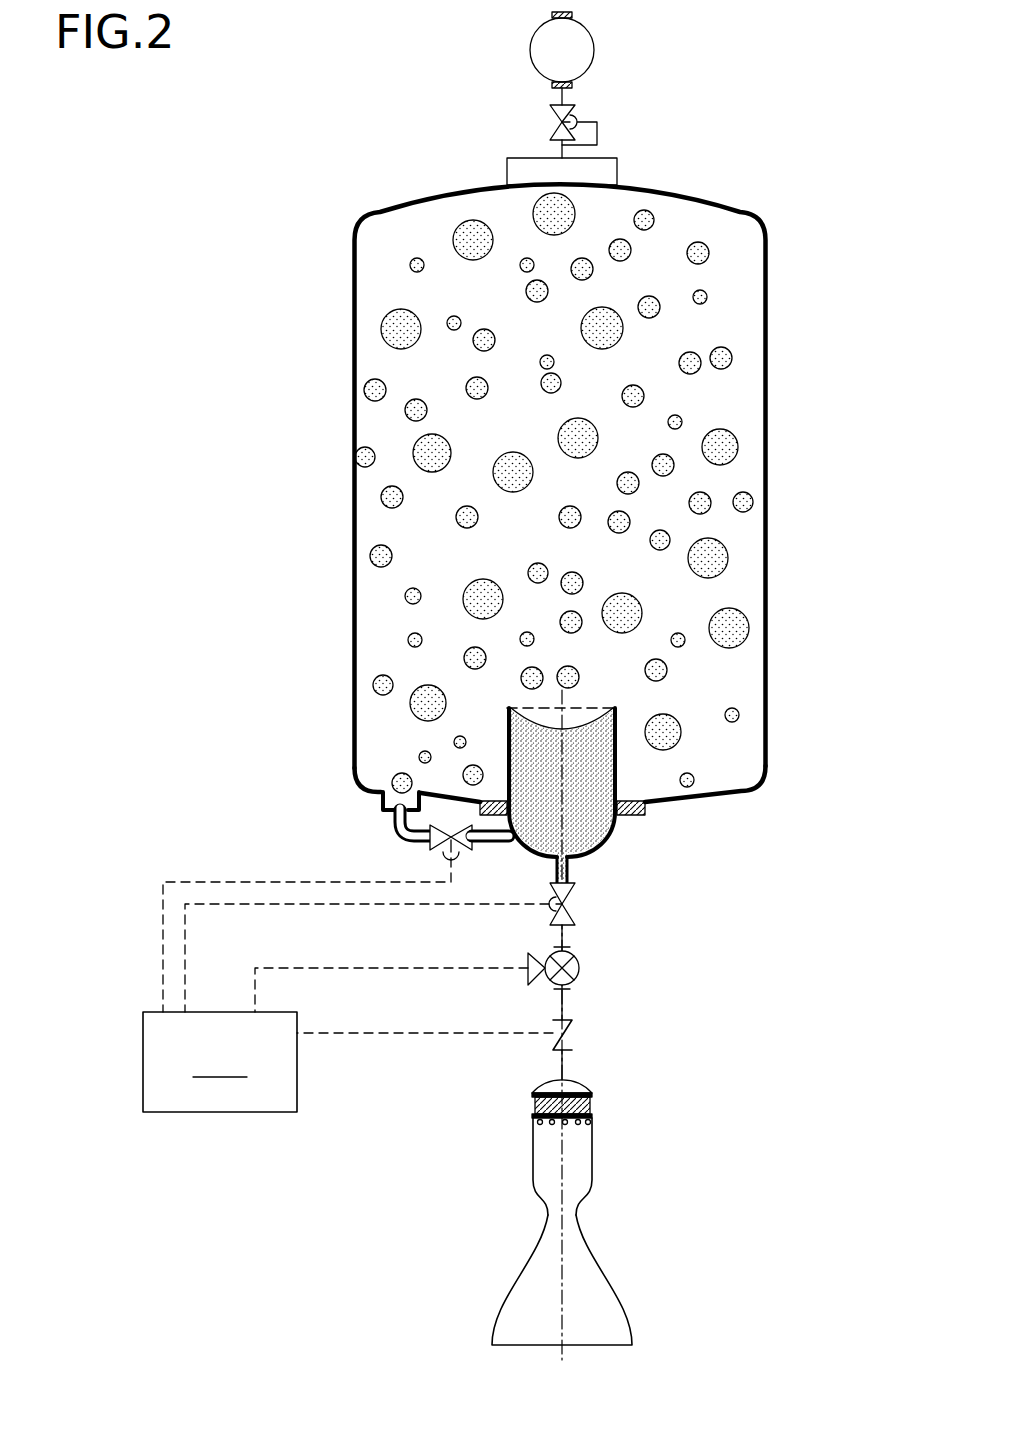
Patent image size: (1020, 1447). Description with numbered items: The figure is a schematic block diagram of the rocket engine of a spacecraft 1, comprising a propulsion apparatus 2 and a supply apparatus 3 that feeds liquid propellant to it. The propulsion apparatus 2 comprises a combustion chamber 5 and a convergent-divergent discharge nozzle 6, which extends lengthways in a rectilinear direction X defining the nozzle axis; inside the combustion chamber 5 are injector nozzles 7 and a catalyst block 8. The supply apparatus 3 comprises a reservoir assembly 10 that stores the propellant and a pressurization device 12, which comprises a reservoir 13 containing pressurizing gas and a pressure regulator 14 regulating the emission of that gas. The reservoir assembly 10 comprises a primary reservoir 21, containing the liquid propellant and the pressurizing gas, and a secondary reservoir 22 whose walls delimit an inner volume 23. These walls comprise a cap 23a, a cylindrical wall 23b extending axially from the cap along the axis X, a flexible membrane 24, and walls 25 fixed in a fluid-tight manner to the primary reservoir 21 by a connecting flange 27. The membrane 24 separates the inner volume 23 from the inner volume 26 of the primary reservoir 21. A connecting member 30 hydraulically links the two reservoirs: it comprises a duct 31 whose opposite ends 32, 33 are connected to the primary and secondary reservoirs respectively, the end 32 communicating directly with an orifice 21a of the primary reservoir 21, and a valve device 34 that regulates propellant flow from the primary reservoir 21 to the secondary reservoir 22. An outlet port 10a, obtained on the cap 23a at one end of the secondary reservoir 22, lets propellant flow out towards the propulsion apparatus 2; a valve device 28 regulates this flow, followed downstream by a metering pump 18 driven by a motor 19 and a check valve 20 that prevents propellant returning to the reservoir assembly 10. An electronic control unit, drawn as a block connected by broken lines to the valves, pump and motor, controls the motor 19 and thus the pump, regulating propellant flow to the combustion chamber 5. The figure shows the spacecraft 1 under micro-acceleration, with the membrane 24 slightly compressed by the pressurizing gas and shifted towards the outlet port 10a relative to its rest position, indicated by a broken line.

The spacecraft 1 is at (128, 232).
The propulsion apparatus 2 is at (608, 1150).
The supply apparatus 3 is at (585, 978).
The combustion chamber 5 is at (548, 1168).
The discharge nozzle 6 is at (602, 1260).
The injector nozzles 7 is at (553, 1123).
The catalyst block 8 is at (558, 1090).
The reservoir assembly 10 is at (785, 448).
The outlet port 10a is at (572, 890).
The pressurization device 12 is at (600, 84).
The reservoir 13 is at (545, 14).
The pressure regulator 14 is at (555, 122).
The metering pump 18 is at (575, 985).
The motor 19 is at (530, 985).
The check valve 20 is at (553, 1021).
The primary reservoir 21 is at (352, 432).
The orifice 21a is at (385, 762).
The secondary reservoir 22 is at (605, 840).
The inner volume 23 is at (617, 738).
The cap 23a is at (577, 863).
The wall 23b is at (617, 696).
The membrane 24 is at (536, 703).
The walls 25 is at (503, 735).
The inner volume 26 is at (748, 580).
The connecting flange 27 is at (642, 816).
The valve device 28 is at (575, 905).
The connecting member 30 is at (375, 818).
The duct 31 is at (480, 852).
The end 32 is at (372, 797).
The end 33 is at (520, 853).
The valve device 34 is at (440, 853).
The direction X is at (562, 1298).